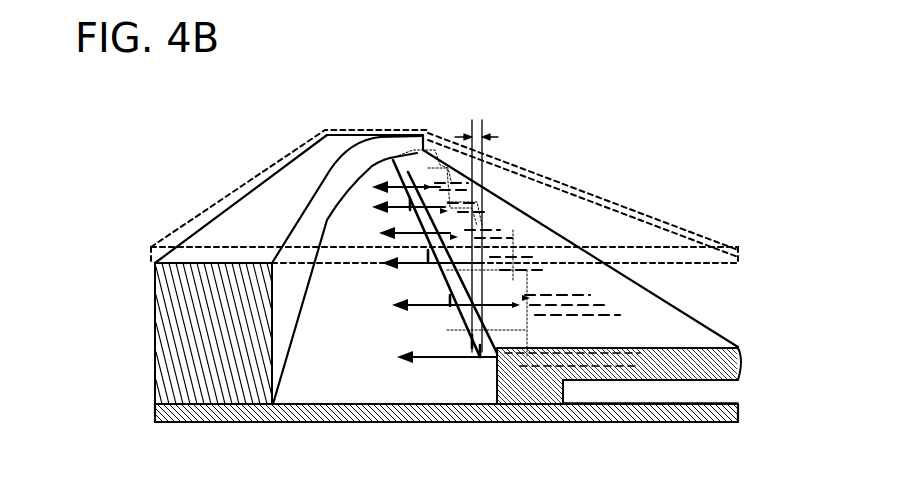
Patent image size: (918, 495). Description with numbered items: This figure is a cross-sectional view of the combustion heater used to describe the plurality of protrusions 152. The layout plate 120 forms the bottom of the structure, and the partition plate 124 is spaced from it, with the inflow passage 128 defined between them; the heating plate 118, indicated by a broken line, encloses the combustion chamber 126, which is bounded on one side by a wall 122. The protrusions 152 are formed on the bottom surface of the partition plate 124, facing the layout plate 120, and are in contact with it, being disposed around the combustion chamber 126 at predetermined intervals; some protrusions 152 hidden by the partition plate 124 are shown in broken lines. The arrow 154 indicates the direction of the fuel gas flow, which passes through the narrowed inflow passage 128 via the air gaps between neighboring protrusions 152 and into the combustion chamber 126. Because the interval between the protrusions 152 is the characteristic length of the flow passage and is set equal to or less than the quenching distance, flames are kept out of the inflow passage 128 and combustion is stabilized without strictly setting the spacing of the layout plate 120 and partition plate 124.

The heating plate 118 is at (168, 246).
The layout plate 120 is at (246, 414).
The side wall block 122 is at (183, 358).
The partition plate 124 is at (745, 349).
The combustion chamber 126 is at (340, 364).
The inflow passage 128 is at (678, 403).
The protrusions 152 is at (430, 228).
The arrow 154 is at (580, 280).